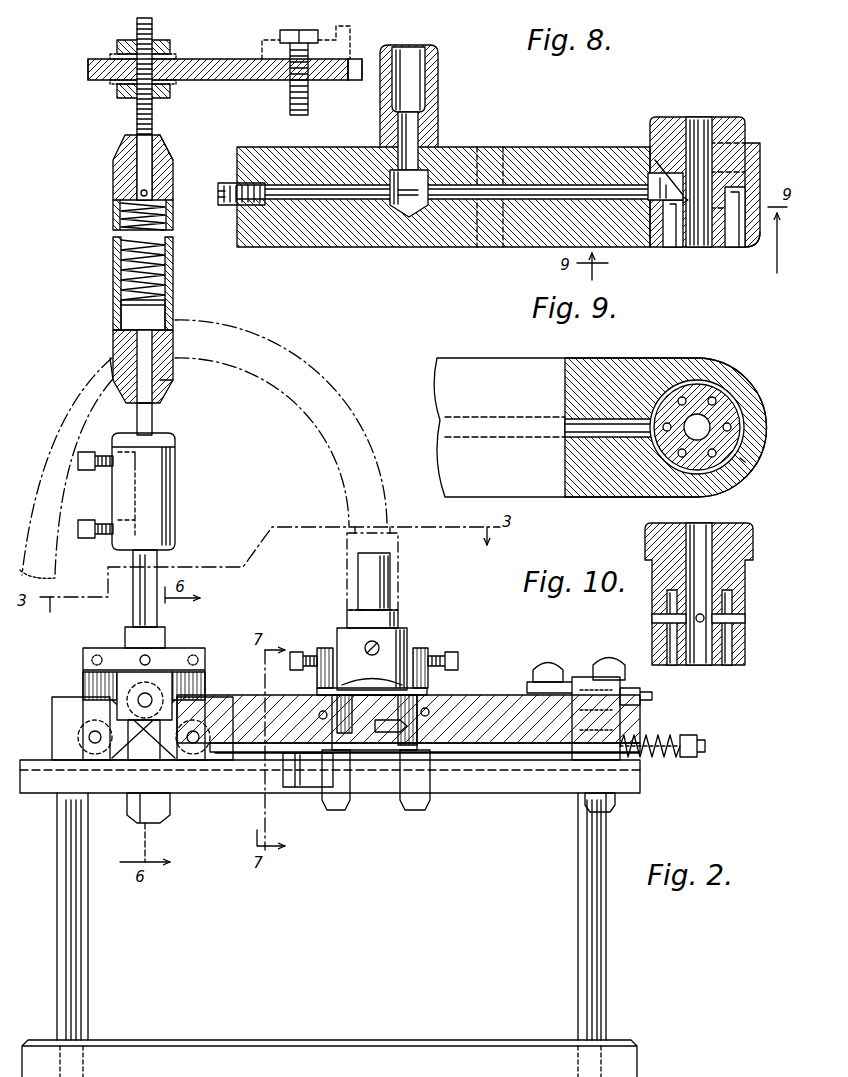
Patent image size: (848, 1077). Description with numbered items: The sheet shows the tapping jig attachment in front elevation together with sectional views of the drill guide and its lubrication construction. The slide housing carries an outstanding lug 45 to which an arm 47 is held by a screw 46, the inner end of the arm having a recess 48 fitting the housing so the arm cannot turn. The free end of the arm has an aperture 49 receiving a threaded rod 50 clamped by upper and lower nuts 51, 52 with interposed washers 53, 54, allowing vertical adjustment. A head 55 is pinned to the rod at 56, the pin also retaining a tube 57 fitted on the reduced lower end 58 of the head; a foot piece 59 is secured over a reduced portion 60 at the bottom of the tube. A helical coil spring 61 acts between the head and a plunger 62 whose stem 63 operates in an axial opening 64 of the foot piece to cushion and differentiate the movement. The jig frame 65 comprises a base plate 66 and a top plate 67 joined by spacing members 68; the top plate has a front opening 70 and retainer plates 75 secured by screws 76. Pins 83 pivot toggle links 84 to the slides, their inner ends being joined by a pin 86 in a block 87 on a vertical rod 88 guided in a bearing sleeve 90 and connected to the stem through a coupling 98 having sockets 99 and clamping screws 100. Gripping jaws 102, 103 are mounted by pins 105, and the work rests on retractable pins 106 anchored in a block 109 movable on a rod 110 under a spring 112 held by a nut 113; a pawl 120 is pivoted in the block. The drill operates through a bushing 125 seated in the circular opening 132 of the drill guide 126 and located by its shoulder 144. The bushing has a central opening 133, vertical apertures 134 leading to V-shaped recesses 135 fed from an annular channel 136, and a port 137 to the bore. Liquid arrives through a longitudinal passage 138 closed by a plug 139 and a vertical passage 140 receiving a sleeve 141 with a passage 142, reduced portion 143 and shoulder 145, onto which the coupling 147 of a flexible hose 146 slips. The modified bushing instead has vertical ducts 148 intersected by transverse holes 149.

In FIG. 2, the lug 45 is at (316, 55).
In FIG. 2, the screw 46 is at (280, 38).
In FIG. 2, the arm 47 is at (208, 60).
In FIG. 2, the recess 48 is at (363, 60).
In FIG. 2, the aperture 49 is at (88, 68).
In FIG. 2, the threaded rod 50 is at (136, 115).
In FIG. 2, the upper nut 51 is at (160, 48).
In FIG. 2, the lower nut 52 is at (166, 92).
In FIG. 2, the washer 53 is at (112, 56).
In FIG. 2, the washer 54 is at (112, 84).
In FIG. 2, the head 55 is at (113, 165).
In FIG. 2, the pin 56 is at (173, 172).
In FIG. 2, the tube 57 is at (113, 212).
In FIG. 2, the reduced lower end 58 is at (165, 198).
In FIG. 2, the foot piece 59 is at (112, 372).
In FIG. 2, the reduced end portion 60 is at (173, 348).
In FIG. 2, the helical coil spring 61 is at (173, 268).
In FIG. 2, the plunger 62 is at (145, 313).
In FIG. 2, the stem 63 is at (152, 420).
In FIG. 2, the axial opening 64 is at (165, 382).
In FIG. 2, the frame 65 is at (160, 1038).
In FIG. 2, the base plate 66 is at (405, 1055).
In FIG. 2, the top plate 67 is at (525, 790).
In FIG. 2, the spacing members 68 is at (580, 890).
In FIG. 2, the front opening 70 is at (390, 780).
In FIG. 2, the retainer plates 75 is at (472, 752).
In FIG. 2, the screws 76 is at (300, 790).
In FIG. 2, the pins 83 is at (200, 735).
In FIG. 2, the toggle links 84 is at (150, 745).
In FIG. 2, the pin 86 is at (148, 698).
In FIG. 2, the block 87 is at (95, 680).
In FIG. 2, the vertical rod 88 is at (157, 560).
In FIG. 2, the guide bearing 90 is at (125, 637).
In FIG. 2, the coupling 98 is at (175, 505).
In FIG. 2, the sockets 99 is at (122, 510).
In FIG. 2, the clamping screws 100 is at (80, 520).
In FIG. 2, the gripping jaw 102 is at (337, 705).
In FIG. 2, the gripping jaw 103 is at (417, 735).
In FIG. 2, the pins 105 is at (428, 710).
In FIG. 2, the pins 106 is at (380, 732).
In FIG. 2, the block 109 is at (620, 715).
In FIG. 2, the rod 110 is at (655, 760).
In FIG. 2, the spring 112 is at (690, 752).
In FIG. 2, the nut 113 is at (705, 748).
In FIG. 2, the pawl 120 is at (652, 696).
In FIG. 2, the bushing 125 is at (398, 620).
In FIG. 8, the bushing 125 is at (672, 117).
In FIG. 9, the bushing 125 is at (690, 385).
In FIG. 10, the bushing 125 is at (662, 525).
In FIG. 2, the drill guide 126 is at (407, 645).
In FIG. 8, the drill guide 126 is at (520, 160).
In FIG. 9, the drill guide 126 is at (622, 348).
In FIG. 8, the circular opening 132 is at (760, 152).
In FIG. 8, the central opening 133 is at (705, 125).
In FIG. 10, the central opening 133 is at (705, 532).
In FIG. 9, the vertical apertures 134 is at (720, 393).
In FIG. 8, the V-shaped recesses 135 is at (745, 188).
In FIG. 9, the V-shaped recesses 135 is at (742, 400).
In FIG. 8, the annular channel 136 is at (752, 240).
In FIG. 9, the annular channel 136 is at (745, 462).
In FIG. 8, the port 137 is at (688, 200).
In FIG. 8, the longitudinal passage 138 is at (548, 195).
In FIG. 9, the longitudinal passage 138 is at (615, 440).
In FIG. 8, the plug 139 is at (222, 206).
In FIG. 8, the vertical passage 140 is at (416, 182).
In FIG. 2, the sleeve 141 is at (370, 590).
In FIG. 8, the sleeve 141 is at (438, 95).
In FIG. 8, the passage 142 is at (420, 75).
In FIG. 8, the reduced portion 143 is at (416, 132).
In FIG. 8, the shoulder 144 is at (652, 170).
In FIG. 8, the shoulder 145 is at (426, 178).
In FIG. 2, the flexible hose 146 is at (338, 407).
In FIG. 2, the coupling 147 is at (398, 565).
In FIG. 10, the vertical ducts 148 is at (727, 666).
In FIG. 10, the holes 149 is at (704, 620).